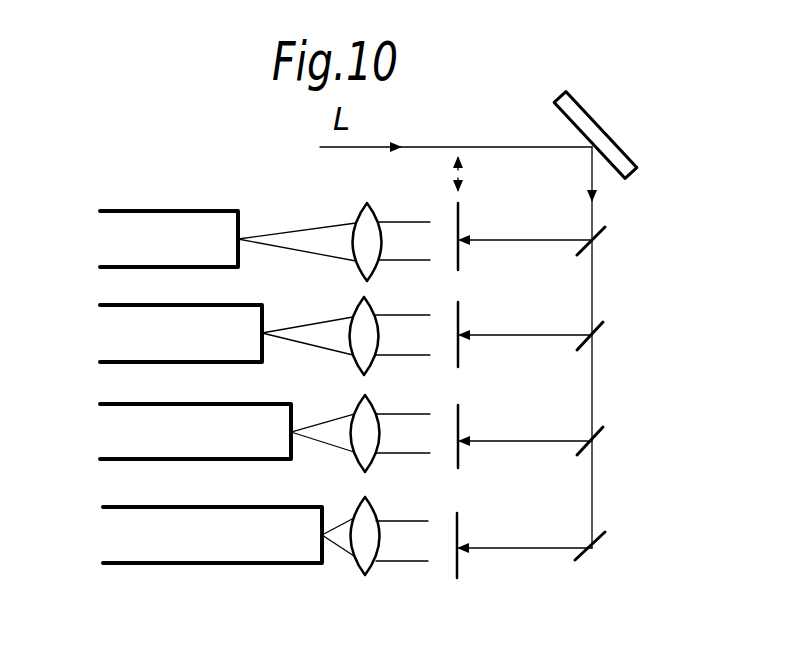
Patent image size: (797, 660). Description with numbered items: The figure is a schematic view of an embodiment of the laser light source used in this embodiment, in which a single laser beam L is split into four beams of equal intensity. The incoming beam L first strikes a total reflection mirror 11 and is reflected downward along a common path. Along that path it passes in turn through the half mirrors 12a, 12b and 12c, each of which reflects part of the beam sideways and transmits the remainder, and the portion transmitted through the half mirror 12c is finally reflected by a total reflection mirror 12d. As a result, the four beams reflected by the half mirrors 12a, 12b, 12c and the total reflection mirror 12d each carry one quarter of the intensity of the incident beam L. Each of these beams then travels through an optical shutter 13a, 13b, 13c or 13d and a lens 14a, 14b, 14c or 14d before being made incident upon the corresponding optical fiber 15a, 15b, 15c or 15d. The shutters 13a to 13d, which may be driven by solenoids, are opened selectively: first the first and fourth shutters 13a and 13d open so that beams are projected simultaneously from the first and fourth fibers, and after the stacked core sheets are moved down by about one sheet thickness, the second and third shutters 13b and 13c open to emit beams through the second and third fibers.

The total reflection mirror 11 is at (590, 127).
The half mirror 12a is at (600, 230).
The half mirror 12b is at (600, 328).
The half mirror 12c is at (600, 434).
The total reflection mirror 12d is at (605, 532).
The optical shutter 13a is at (458, 222).
The optical shutter 13b is at (458, 318).
The optical shutter 13c is at (458, 420).
The optical shutter 13d is at (460, 567).
The lens 14a is at (367, 230).
The lens 14b is at (362, 308).
The lens 14c is at (358, 404).
The lens 14d is at (365, 557).
The optical fiber 15a is at (160, 230).
The optical fiber 15b is at (142, 347).
The optical fiber 15c is at (130, 445).
The optical fiber 15d is at (137, 555).